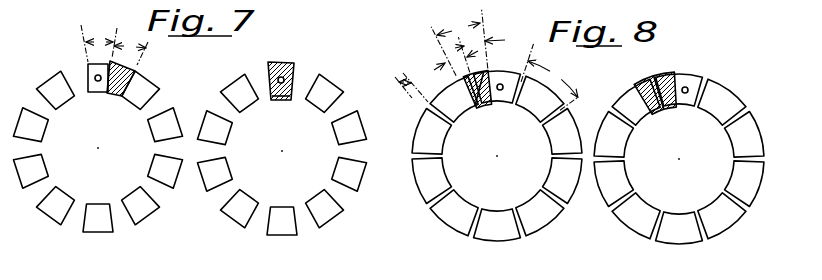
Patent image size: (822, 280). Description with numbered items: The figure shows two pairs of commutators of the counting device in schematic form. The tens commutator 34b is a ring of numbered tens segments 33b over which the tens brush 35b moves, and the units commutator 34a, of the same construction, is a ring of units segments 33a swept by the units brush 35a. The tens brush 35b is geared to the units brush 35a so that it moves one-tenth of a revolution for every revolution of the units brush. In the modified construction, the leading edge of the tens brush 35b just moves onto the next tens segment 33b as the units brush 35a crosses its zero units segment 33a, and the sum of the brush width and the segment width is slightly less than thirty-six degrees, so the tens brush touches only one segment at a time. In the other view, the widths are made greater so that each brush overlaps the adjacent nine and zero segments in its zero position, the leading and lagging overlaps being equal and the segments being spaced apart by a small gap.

In FIG. 7, the units segment 33a is at (352, 114).
In FIG. 8, the units segment 33a is at (718, 86).
In FIG. 7, the tens segment 33b is at (90, 67).
In FIG. 7, the units commutator 34a is at (287, 135).
In FIG. 8, the units commutator 34a is at (679, 142).
In FIG. 7, the tens commutator 34b is at (99, 128).
In FIG. 8, the tens commutator 34b is at (500, 125).
In FIG. 7, the units brush 35a is at (283, 62).
In FIG. 8, the units brush 35a is at (663, 108).
In FIG. 7, the tens brush 35b is at (118, 96).
In FIG. 8, the tens brush 35b is at (489, 106).